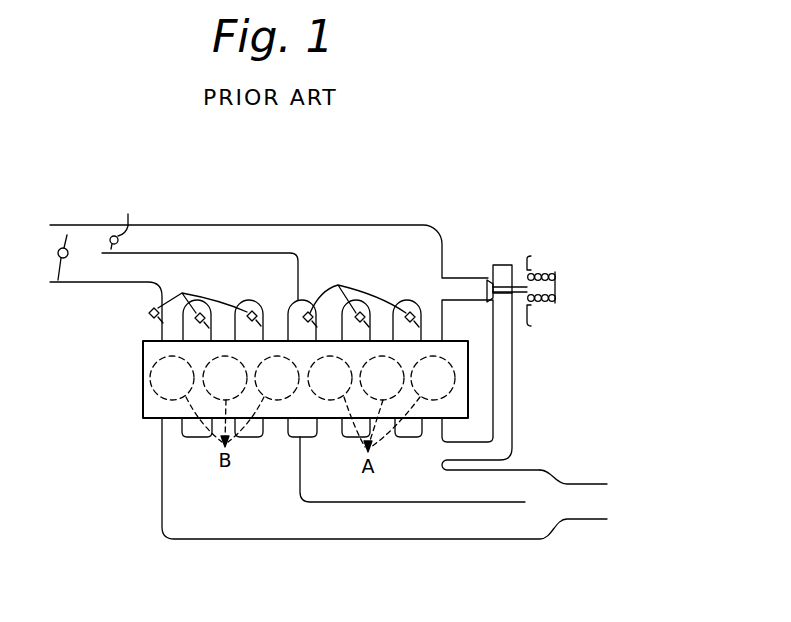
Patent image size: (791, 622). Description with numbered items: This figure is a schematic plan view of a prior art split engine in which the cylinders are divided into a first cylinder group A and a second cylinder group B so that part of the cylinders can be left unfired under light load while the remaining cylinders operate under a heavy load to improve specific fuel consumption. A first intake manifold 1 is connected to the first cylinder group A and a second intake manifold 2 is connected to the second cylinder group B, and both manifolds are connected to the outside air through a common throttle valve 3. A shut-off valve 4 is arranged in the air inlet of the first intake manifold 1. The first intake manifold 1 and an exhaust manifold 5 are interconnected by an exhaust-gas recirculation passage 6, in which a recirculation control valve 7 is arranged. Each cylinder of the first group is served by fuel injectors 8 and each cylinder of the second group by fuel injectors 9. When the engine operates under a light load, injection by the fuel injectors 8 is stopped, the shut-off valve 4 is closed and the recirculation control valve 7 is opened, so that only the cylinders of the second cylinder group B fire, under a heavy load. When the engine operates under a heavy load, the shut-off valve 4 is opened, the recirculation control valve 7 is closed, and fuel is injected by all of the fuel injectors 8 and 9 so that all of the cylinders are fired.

The first intake manifold 1 is at (374, 232).
The second intake manifold 2 is at (245, 253).
The common throttle valve 3 is at (57, 268).
The shut-off valve 4 is at (122, 219).
The exhaust manifold 5 is at (533, 470).
The exhaust-gas recirculation passage 6 is at (513, 378).
The recirculation control valve 7 is at (487, 283).
The fuel injectors 8 is at (338, 285).
The fuel injectors 9 is at (182, 293).